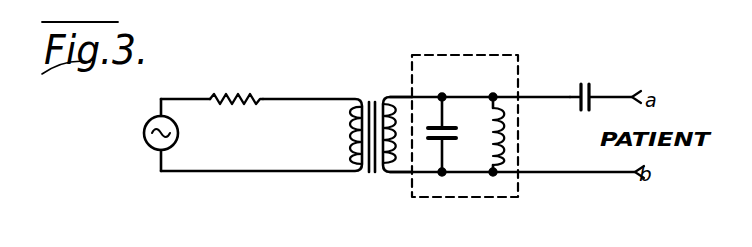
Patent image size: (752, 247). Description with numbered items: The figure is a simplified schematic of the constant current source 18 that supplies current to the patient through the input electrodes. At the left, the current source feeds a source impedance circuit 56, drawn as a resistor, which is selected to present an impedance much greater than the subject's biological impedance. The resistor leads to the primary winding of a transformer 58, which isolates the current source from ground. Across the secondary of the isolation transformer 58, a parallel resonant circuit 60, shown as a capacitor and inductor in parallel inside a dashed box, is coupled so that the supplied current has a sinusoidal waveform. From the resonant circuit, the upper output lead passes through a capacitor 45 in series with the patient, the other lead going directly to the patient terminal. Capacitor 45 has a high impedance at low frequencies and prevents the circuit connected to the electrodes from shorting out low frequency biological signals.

The constant current source 18 is at (128, 164).
The source impedance circuit 56 is at (241, 86).
The transformer 58 is at (371, 178).
The parallel resonant circuit 60 is at (466, 188).
The capacitor 45 is at (588, 80).